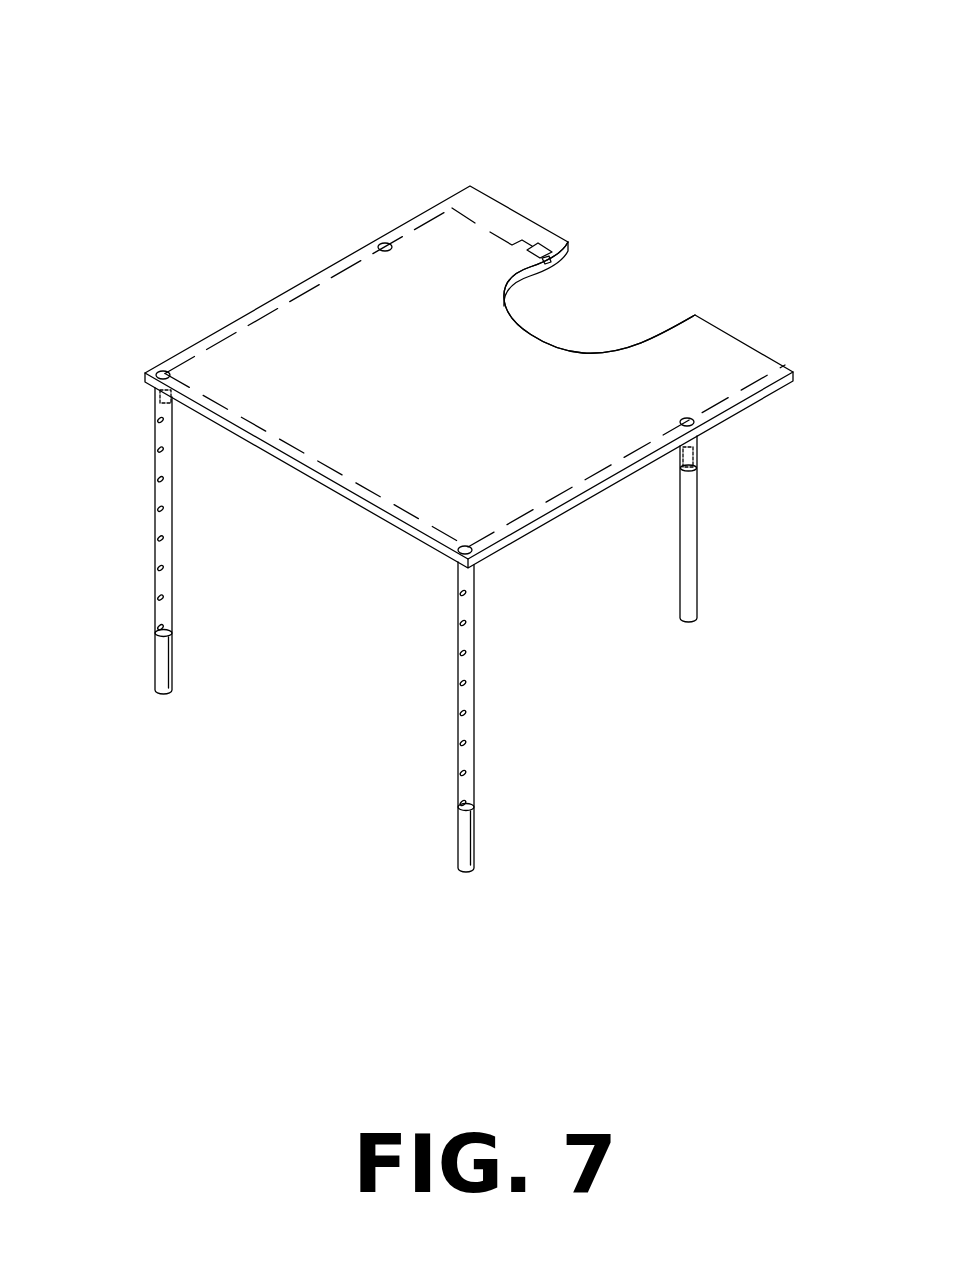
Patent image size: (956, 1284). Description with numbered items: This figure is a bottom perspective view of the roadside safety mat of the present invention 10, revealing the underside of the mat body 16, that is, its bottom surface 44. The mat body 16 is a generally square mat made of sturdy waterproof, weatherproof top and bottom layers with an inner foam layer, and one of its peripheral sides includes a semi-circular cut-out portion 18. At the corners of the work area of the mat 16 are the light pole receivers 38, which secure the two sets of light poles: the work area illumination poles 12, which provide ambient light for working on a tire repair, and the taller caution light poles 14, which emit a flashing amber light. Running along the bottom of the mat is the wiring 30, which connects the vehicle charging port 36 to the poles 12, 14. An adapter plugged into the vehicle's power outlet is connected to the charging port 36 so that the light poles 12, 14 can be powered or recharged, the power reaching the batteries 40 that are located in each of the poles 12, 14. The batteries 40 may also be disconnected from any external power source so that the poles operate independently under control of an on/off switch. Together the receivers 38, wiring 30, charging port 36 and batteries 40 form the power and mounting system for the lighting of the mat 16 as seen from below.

The roadside safety mat 10 is at (243, 95).
The work area illumination pole 12 is at (685, 610).
The caution light pole 14 is at (165, 610).
The mat body 16 is at (412, 379).
The semi-circular cut-out portion 18 is at (617, 283).
The wiring 30 is at (273, 308).
The vehicle charging port 36 is at (567, 258).
The light pole receiver 38 is at (385, 242).
The battery 40 is at (158, 397).
The bottom surface 44 is at (403, 488).